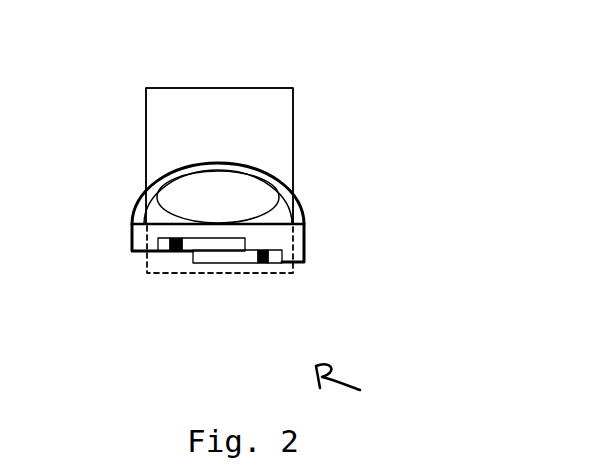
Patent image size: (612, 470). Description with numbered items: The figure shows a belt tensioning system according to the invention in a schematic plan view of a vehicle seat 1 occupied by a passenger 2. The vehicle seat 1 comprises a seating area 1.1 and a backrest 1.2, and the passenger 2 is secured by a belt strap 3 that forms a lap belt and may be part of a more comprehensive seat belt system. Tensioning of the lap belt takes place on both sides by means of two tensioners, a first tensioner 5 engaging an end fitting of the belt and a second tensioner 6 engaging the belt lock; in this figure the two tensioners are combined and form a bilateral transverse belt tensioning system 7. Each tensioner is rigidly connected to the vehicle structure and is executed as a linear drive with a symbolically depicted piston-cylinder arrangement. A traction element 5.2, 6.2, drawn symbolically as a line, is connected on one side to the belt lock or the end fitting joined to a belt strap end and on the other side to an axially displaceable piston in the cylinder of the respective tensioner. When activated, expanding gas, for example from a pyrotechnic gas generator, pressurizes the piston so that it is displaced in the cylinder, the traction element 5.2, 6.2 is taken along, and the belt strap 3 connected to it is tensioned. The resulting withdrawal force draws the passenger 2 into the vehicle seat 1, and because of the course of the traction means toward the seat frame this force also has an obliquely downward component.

The vehicle seat 1 is at (275, 69).
The seating area 1.1 is at (232, 139).
The backrest 1.2 is at (213, 275).
The passenger 2 is at (222, 206).
The belt strap 3 is at (303, 198).
The first tensioner 5 is at (187, 251).
The traction element 5.2 is at (125, 245).
The second tensioner 6 is at (273, 263).
The traction element 6.2 is at (308, 250).
The bilateral transverse belt tensioning system 7 is at (355, 387).